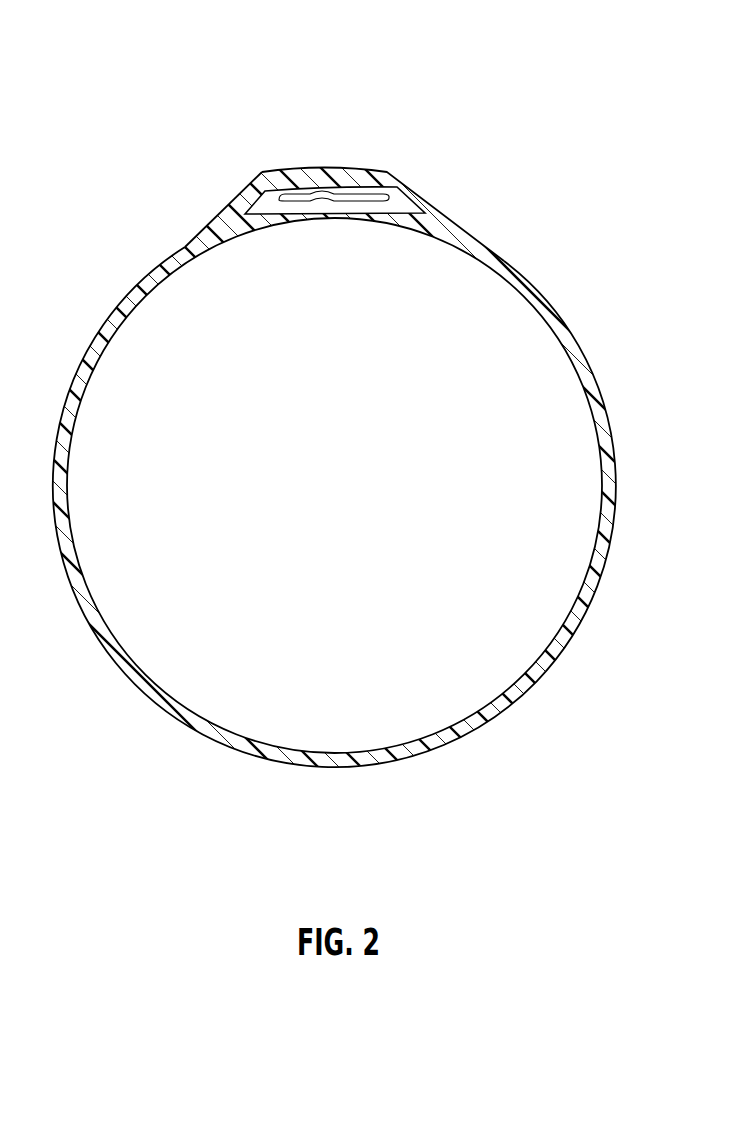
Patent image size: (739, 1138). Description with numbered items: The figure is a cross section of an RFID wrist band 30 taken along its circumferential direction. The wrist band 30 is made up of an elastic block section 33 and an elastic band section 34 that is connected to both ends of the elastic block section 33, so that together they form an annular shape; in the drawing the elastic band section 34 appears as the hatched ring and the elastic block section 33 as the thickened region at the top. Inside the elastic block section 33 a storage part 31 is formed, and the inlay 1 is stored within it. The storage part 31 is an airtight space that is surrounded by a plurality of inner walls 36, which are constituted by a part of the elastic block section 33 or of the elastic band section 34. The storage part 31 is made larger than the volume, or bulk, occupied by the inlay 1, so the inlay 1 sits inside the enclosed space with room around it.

The RFID wrist band 30 is at (320, 38).
The storage part 31 is at (260, 172).
The elastic block section 33 is at (337, 175).
The elastic band section 34 is at (536, 287).
The inner walls 36 is at (268, 195).
The inlay 1 is at (375, 196).